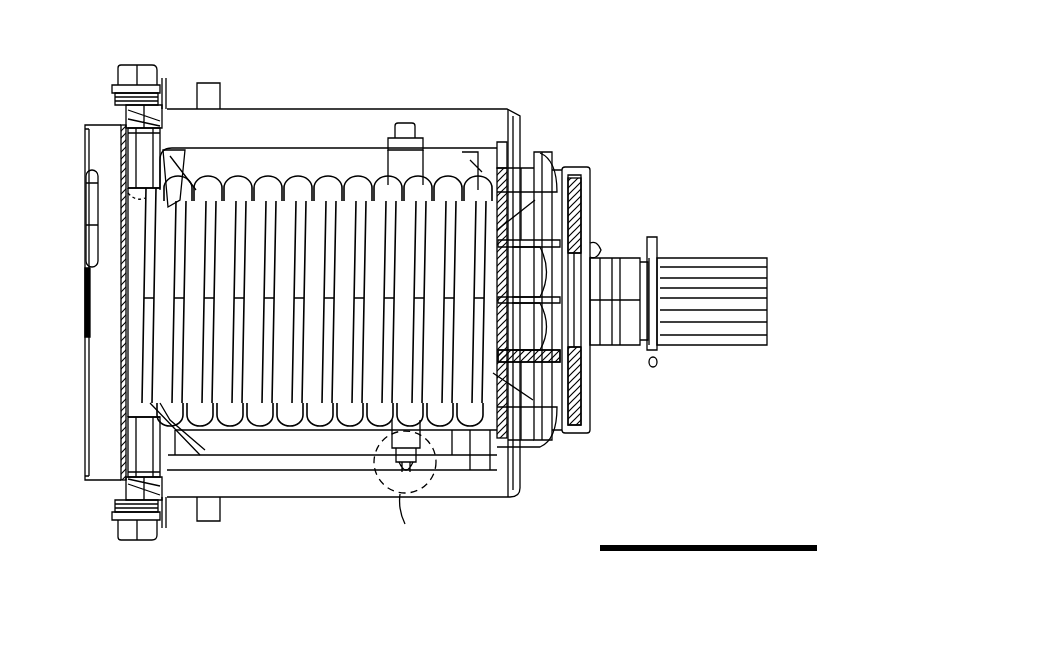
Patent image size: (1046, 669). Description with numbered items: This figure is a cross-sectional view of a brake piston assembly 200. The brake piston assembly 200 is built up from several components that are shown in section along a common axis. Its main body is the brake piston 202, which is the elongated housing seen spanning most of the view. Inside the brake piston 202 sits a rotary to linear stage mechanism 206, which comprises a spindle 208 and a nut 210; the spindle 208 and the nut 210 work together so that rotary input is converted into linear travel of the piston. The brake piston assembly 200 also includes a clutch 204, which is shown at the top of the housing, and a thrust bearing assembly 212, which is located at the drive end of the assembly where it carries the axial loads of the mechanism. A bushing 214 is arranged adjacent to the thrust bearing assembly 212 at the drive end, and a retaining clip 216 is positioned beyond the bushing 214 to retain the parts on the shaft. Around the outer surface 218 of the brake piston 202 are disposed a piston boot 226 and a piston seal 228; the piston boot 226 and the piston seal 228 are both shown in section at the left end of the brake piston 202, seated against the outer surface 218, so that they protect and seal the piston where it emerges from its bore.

The brake piston assembly 200 is at (541, 44).
The brake piston 202 is at (323, 98).
The clutch 204 is at (408, 112).
The rotary to linear stage mechanism 206 is at (315, 434).
The spindle 208 is at (457, 388).
The nut 210 is at (247, 427).
The thrust bearing assembly 212 is at (580, 150).
The bushing 214 is at (622, 285).
The retaining clip 216 is at (655, 240).
The outer surface 218 is at (278, 107).
The piston boot 226 is at (124, 70).
The piston seal 228 is at (212, 96).